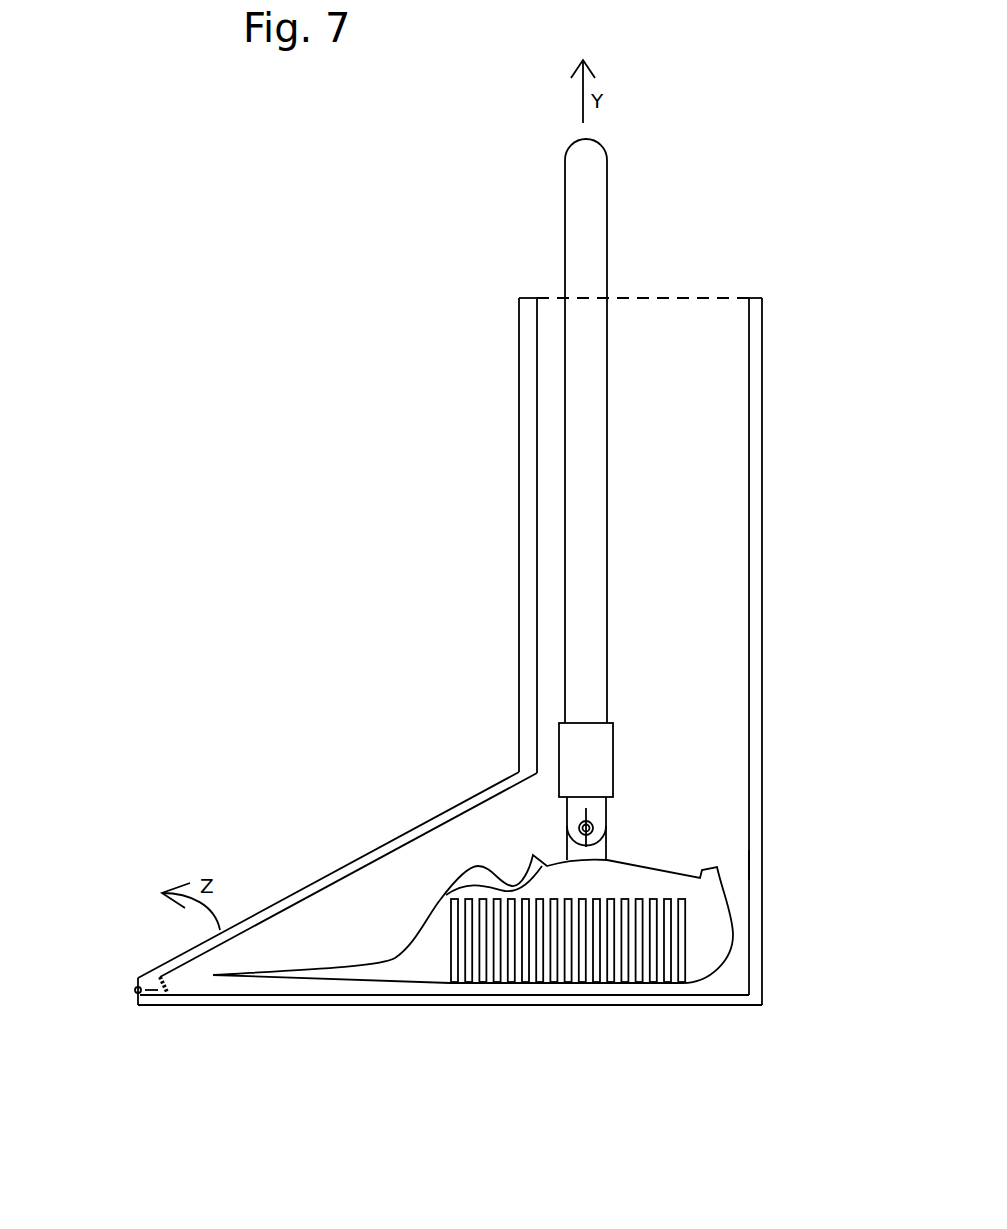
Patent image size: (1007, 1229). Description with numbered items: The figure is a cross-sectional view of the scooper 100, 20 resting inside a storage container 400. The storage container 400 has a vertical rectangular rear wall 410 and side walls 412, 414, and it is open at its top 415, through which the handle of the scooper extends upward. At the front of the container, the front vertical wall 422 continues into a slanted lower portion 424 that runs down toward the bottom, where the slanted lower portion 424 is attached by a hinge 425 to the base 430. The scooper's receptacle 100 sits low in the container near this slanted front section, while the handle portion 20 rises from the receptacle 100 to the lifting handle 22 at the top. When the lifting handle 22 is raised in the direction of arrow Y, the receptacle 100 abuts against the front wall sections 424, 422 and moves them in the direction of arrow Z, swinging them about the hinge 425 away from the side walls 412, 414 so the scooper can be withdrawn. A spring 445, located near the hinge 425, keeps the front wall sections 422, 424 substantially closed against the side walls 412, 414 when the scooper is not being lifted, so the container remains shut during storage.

The lifting handle 22 is at (590, 190).
The scooper handle portion 20 is at (600, 581).
The receptacle 100 is at (616, 893).
The storage container 400 is at (509, 663).
The vertical rectangular rear wall 410 is at (757, 685).
The side wall 412 is at (727, 792).
The side wall 414 is at (752, 863).
The open top 415 is at (655, 318).
The front vertical wall 422 is at (520, 700).
The slanted lower portion 424 is at (358, 860).
The hinge 425 is at (135, 990).
The base 430 is at (353, 1000).
The spring 445 is at (168, 982).